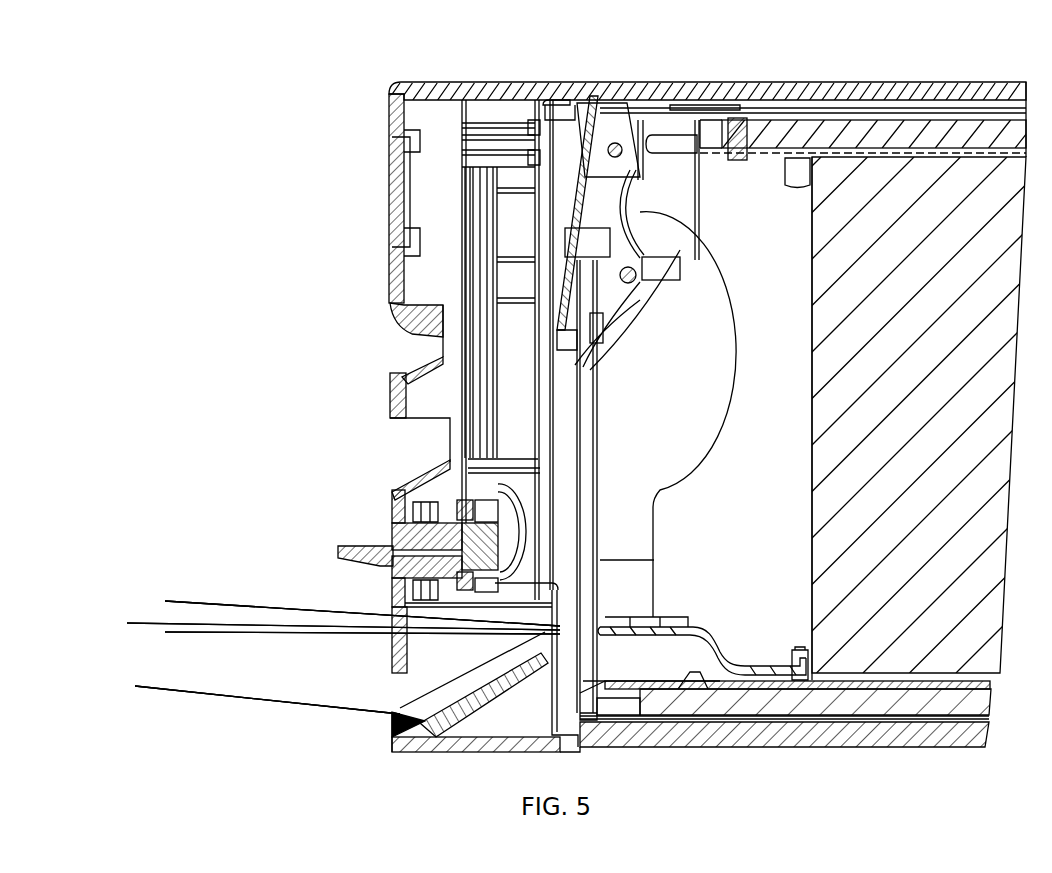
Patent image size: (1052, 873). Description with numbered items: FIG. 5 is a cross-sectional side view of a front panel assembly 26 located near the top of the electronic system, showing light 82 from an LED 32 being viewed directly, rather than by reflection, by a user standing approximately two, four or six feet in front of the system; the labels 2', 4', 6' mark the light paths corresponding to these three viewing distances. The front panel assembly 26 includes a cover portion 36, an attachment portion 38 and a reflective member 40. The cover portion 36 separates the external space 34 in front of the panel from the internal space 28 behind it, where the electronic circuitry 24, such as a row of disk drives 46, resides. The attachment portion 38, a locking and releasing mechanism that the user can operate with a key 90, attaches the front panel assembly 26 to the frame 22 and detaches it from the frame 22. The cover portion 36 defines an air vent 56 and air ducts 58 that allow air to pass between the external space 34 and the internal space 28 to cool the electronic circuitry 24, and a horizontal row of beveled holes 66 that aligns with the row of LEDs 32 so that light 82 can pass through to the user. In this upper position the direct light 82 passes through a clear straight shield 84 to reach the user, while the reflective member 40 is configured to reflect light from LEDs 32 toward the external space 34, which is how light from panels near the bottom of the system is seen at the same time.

The frame 22 is at (598, 108).
The electronic circuitry 24 is at (924, 377).
The front panel assembly 26 is at (360, 160).
The internal space 28 is at (697, 387).
The LED 32 is at (605, 628).
The external space 34 is at (163, 565).
The cover portion 36 is at (395, 262).
The attachment portion 38 is at (395, 498).
The reflective member 40 is at (392, 728).
The disk drive 46 is at (818, 425).
The air vent 56 is at (374, 684).
The air ducts 58 is at (396, 349).
The beveled holes 66 is at (398, 755).
The light 82 is at (230, 548).
The clear straight shield 84 is at (405, 665).
The key 90 is at (360, 546).
The ray 2' is at (347, 649).
The ray 4' is at (342, 619).
The ray 6' is at (356, 639).